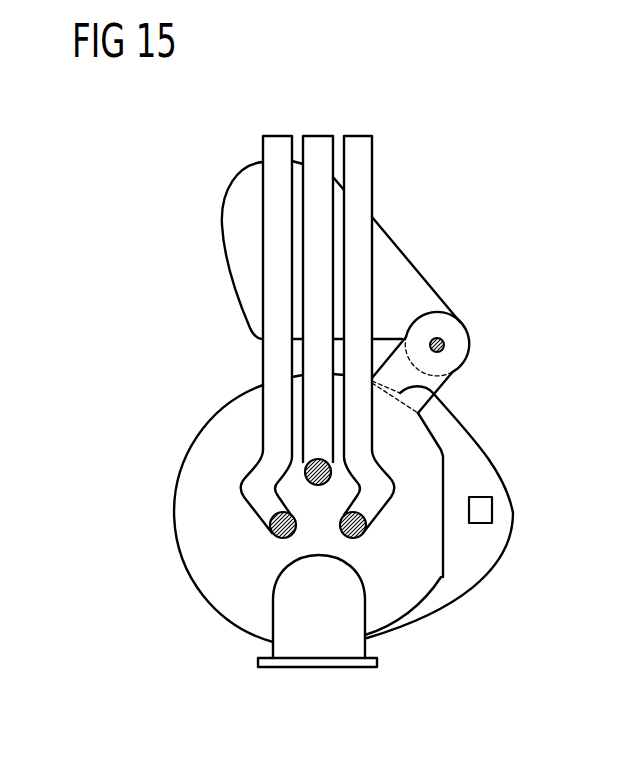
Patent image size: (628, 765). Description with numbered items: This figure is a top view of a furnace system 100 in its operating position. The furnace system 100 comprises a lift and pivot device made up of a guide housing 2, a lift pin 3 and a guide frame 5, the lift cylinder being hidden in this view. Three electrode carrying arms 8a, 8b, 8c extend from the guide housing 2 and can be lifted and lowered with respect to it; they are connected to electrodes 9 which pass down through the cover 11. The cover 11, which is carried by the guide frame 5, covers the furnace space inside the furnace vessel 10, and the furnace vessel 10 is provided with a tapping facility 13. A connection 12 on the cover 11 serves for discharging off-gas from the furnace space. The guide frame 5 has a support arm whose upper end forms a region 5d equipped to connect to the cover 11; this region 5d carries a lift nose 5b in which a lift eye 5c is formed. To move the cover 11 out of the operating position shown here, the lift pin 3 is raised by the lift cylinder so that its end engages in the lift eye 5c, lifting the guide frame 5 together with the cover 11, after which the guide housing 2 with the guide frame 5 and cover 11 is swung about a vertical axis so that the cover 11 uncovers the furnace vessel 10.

The furnace system 100 is at (182, 337).
The guide housing 2 is at (407, 256).
The lift pin 3 is at (444, 336).
The guide frame 5 is at (453, 376).
The lift nose 5b is at (437, 313).
The lift eye 5c is at (449, 343).
The region 5d is at (438, 394).
The electrode carrying arm 8a is at (278, 135).
The electrode carrying arm 8b is at (320, 135).
The electrode carrying arm 8c is at (360, 135).
The electrodes 9 is at (305, 478).
The furnace vessel 10 is at (420, 628).
The cover 11 is at (197, 527).
The connection 12 is at (318, 668).
The tapping facility 13 is at (492, 508).